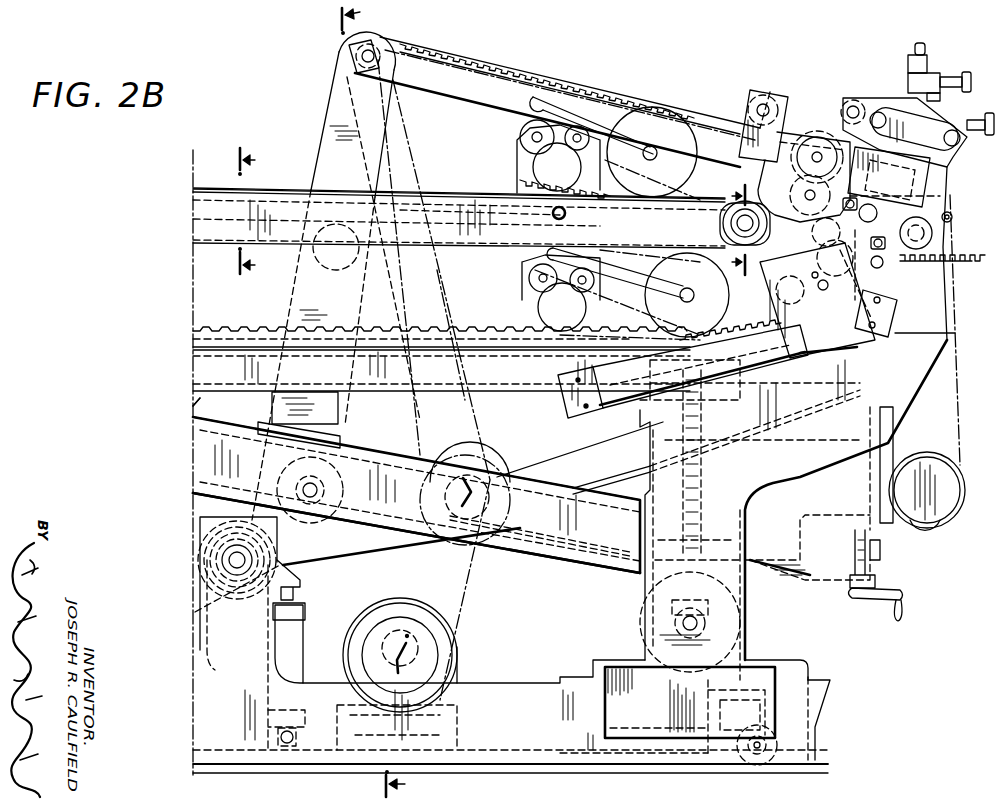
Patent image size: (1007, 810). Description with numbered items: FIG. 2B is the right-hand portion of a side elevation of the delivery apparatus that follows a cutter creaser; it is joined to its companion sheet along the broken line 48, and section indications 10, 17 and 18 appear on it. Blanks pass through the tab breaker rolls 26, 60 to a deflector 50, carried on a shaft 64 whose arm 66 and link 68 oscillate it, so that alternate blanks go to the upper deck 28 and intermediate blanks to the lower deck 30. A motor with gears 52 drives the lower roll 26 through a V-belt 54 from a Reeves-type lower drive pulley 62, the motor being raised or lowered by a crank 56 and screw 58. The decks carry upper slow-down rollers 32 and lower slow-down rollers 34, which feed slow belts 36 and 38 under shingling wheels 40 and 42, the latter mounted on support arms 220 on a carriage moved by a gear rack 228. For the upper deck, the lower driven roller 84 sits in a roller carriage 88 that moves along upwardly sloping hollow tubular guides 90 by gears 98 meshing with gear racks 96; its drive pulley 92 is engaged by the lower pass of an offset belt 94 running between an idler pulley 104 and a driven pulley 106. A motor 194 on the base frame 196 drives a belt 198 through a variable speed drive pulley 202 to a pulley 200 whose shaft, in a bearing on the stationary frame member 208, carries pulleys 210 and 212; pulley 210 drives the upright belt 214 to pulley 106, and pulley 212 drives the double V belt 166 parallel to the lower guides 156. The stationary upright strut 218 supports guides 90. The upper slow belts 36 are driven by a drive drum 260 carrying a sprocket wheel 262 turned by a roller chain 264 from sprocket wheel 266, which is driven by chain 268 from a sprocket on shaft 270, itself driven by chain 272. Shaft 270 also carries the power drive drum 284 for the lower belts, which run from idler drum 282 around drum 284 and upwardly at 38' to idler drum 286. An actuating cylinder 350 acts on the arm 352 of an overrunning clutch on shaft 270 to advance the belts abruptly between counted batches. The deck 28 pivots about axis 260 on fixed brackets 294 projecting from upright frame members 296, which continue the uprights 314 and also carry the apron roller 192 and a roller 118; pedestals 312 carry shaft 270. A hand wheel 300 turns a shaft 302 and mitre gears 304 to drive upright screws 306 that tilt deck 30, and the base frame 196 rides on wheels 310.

The section line 10 is at (360, 402).
The section line 17 is at (258, 211).
The section line 18 is at (731, 225).
The lower tab breaker roll 26 is at (945, 232).
The upper deck 28 is at (226, 231).
The lower deck 30 is at (232, 378).
The upper slow-down rollers 32 is at (820, 106).
The lower slow-down rollers 34 is at (850, 278).
The upper slow belts 36 is at (463, 193).
The lower slow belts 38 is at (630, 319).
The upward pass of lower slow belts 38' is at (401, 556).
The upper shingling wheels 40 is at (672, 180).
The lower shingling wheels 42 is at (718, 306).
The broken line 48 is at (193, 410).
The deflector 50 is at (950, 212).
The motor with gears 52 is at (964, 494).
The belt 54 is at (962, 385).
The crank 56 is at (870, 600).
The screw 58 is at (868, 561).
The upper tab breaker roller 60 is at (930, 196).
The lower drive pulley 62 is at (935, 490).
The shaft 64 is at (880, 205).
The arm 66 is at (885, 265).
The link 68 is at (960, 262).
The lower driven roller 84 is at (889, 177).
The roller carriage 88 is at (778, 95).
The hollow tubular guides 90 is at (530, 70).
The drive pulley 92 is at (797, 158).
The offset belt 94 is at (665, 150).
The gear racks 96 is at (548, 78).
The gears 98 is at (768, 90).
The idler pulley 104 is at (942, 163).
The driven pulley 106 is at (378, 38).
The shaft or roller 118 is at (835, 236).
The lower hollow tubular guides 156 is at (683, 370).
The double V belt 166 is at (594, 435).
The apron roller 192 is at (880, 248).
The motor 194 is at (457, 652).
The base frame 196 is at (470, 684).
The belt 198 is at (460, 608).
The pulley 200 is at (507, 476).
The variable speed drive pulley 202 is at (410, 638).
The stationary frame member 208 is at (572, 556).
The pulley 210 is at (500, 530).
The pulley 212 is at (540, 534).
The upright belt 214 is at (447, 304).
The stationary upright strut 218 is at (330, 104).
The support arm 220 is at (648, 158).
The gear rack 228 is at (520, 177).
The drive drum 260 is at (730, 220).
The sprocket wheel 262 is at (705, 255).
The roller chain 264 is at (480, 252).
The sprocket wheel 266 is at (330, 268).
The roller chain 268 is at (340, 403).
The shaft 270 is at (244, 560).
The roller chain 272 is at (237, 655).
The idler drum 282 is at (416, 495).
The power drive drum 284 is at (237, 603).
The idler drum 286 is at (828, 395).
The fixed brackets 294 is at (778, 272).
The upright frame members 296 is at (935, 340).
The hand wheel 300 is at (742, 645).
The shaft 302 is at (698, 620).
The mitre gears 304 is at (742, 600).
The upright screws 306 is at (725, 500).
The wheels 310 is at (762, 762).
The upright pedestals 312 is at (200, 585).
The uprights 314 is at (742, 568).
The actuating cylinder 350 is at (300, 657).
The arm 352 is at (294, 582).